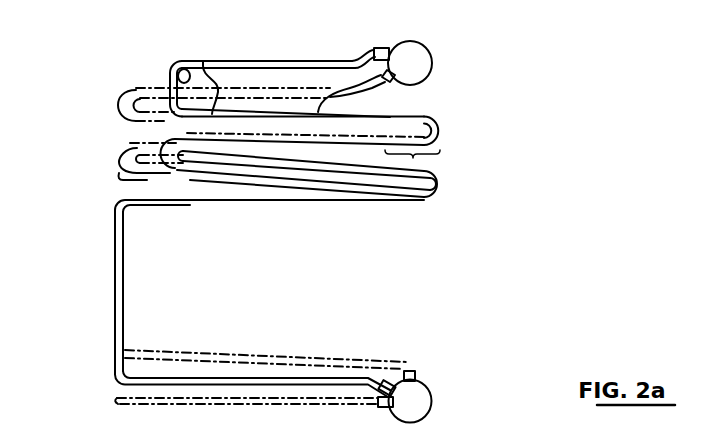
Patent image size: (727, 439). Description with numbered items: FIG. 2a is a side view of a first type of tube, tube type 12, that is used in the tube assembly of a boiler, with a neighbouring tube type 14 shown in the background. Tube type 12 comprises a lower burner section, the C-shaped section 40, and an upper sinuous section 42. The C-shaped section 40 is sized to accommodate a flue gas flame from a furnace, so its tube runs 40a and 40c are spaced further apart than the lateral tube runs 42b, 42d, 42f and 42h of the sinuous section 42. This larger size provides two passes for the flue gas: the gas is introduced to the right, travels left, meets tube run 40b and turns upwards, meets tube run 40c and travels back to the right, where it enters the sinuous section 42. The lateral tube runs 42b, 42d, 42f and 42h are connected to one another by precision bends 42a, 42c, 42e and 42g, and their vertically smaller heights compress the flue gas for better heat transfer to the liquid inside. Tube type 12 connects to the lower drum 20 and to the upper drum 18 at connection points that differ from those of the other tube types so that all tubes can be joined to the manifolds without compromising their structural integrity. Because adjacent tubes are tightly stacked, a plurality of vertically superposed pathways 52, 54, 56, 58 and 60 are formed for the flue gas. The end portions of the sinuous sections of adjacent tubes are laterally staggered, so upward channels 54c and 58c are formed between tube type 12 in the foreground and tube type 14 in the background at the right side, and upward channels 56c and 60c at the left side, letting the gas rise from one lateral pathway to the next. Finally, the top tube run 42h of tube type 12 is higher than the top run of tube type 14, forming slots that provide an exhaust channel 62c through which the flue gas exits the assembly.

The tube type 12 is at (134, 42).
The tube type 14 is at (125, 91).
The upper drum 18 is at (423, 60).
The lower drum 20 is at (427, 382).
The C-shaped section 40 is at (522, 185).
The tube run 40a is at (298, 379).
The tube run 40b is at (155, 292).
The tube run 40c is at (163, 203).
The sinuous section 42 is at (522, 62).
The precision bend 42a is at (438, 190).
The lateral tube run 42b is at (366, 162).
The precision bend 42c is at (150, 152).
The lateral tube run 42d is at (205, 141).
The precision bend 42e is at (440, 126).
The lateral tube run 42f is at (203, 61).
The precision bend 42g is at (172, 61).
The tube run 42h is at (240, 62).
The pathway 52 is at (265, 285).
The pathway 54 is at (262, 172).
The upward channel 54c is at (385, 202).
The pathway 56 is at (287, 152).
The upward channel 56c is at (148, 184).
The pathway 58 is at (322, 166).
The upward channel 58c is at (413, 157).
The pathway 60 is at (376, 49).
The upward channel 60c is at (122, 122).
The exhaust channel 62c is at (287, 59).